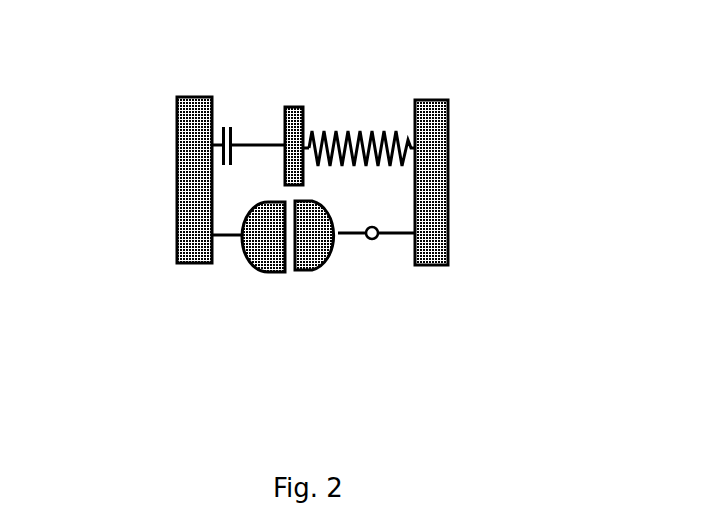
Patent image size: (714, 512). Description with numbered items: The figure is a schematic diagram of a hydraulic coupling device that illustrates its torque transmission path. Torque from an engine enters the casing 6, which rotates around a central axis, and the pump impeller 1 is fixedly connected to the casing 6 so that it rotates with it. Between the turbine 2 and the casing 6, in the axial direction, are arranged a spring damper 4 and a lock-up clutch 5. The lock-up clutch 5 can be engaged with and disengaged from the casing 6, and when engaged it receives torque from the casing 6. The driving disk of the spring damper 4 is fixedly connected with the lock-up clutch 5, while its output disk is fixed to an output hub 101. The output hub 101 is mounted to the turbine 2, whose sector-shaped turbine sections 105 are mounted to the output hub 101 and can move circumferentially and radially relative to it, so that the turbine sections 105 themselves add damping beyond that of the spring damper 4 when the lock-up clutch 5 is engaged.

The casing 6 is at (190, 164).
The lock-up clutch 5 is at (292, 104).
The spring damper 4 is at (371, 130).
The output hub 101 is at (449, 184).
The pump impeller 1 is at (264, 273).
The turbine 2 is at (323, 378).
The turbine section 105 is at (349, 293).